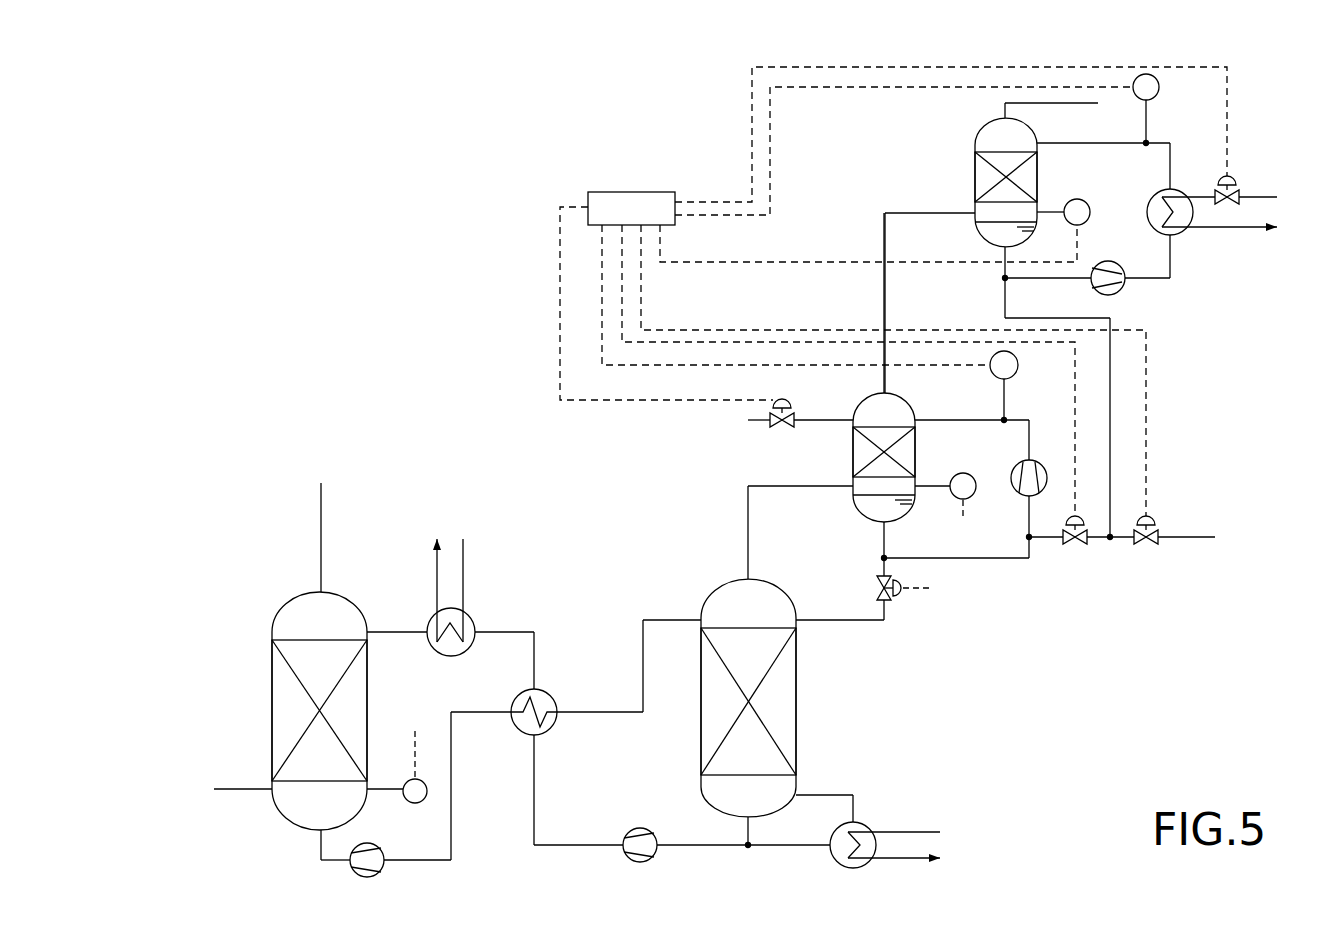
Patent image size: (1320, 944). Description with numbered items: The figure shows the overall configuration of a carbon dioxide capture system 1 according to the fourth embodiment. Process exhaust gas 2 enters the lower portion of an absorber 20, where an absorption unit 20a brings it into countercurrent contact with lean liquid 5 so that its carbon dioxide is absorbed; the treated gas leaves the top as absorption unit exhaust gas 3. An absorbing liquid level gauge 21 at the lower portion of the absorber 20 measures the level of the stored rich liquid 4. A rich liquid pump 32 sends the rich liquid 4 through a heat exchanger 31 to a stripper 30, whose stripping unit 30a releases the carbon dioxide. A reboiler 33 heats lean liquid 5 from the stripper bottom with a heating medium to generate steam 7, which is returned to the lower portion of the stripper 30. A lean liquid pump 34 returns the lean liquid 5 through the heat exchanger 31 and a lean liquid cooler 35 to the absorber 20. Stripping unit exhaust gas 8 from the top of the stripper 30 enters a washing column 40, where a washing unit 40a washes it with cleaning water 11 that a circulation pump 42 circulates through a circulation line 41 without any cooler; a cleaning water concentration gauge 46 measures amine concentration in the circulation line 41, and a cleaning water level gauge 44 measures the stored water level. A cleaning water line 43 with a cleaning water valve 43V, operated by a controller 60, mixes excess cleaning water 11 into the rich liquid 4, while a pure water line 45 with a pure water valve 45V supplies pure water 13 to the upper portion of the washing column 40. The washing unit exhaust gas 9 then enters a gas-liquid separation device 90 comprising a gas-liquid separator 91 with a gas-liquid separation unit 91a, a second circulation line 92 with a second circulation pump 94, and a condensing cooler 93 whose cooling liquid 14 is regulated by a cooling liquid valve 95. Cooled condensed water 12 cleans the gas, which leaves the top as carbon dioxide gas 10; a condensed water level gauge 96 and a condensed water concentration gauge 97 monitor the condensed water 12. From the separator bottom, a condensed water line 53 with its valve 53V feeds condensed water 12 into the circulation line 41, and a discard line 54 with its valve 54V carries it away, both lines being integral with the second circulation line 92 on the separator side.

The carbon dioxide capture system 1 is at (405, 192).
The process exhaust gas 2 is at (249, 805).
The absorption unit exhaust gas 3 is at (335, 539).
The rich liquid 4 is at (465, 727).
The lean liquid 5 is at (491, 617).
The steam 7 is at (810, 780).
The stripping unit exhaust gas 8 is at (733, 522).
The washing unit exhaust gas 9 is at (870, 280).
The carbon dioxide gas 10 is at (1047, 113).
The cleaning water 11 is at (837, 637).
The condensed water 12 is at (1052, 558).
The pure water 13 is at (742, 435).
The cooling liquid 14 is at (1245, 183).
The absorber 20 is at (264, 686).
The absorption unit 20a is at (283, 733).
The absorbing liquid level gauge 21 is at (427, 793).
The stripper 30 is at (810, 712).
The stripping unit 30a is at (712, 703).
The heat exchanger 31 is at (548, 695).
The rich liquid pump 32 is at (380, 849).
The reboiler 33 is at (868, 828).
The lean liquid pump 34 is at (645, 827).
The lean liquid cooler 35 is at (468, 650).
The washing column 40 is at (842, 497).
The washing unit 40a is at (913, 438).
The circulation line 41 is at (1031, 447).
The circulation pump 42 is at (1015, 481).
The cleaning water line 43 is at (834, 618).
The cleaning water valve 43V is at (903, 603).
The cleaning water level gauge 44 is at (973, 477).
The pure water line 45 is at (826, 423).
The pure water valve 45V is at (781, 428).
The cleaning water concentration gauge 46 is at (1019, 366).
The condensed water line 53 is at (1040, 540).
The valve 53V is at (1078, 546).
The discard line 54 is at (1198, 540).
The valve 54V is at (1152, 518).
The controller 60 is at (631, 192).
The gas-liquid separation device 90 is at (947, 130).
The gas-liquid separator 91 is at (967, 157).
The gas-liquid separation unit 91a is at (983, 175).
The second circulation line 92 is at (1170, 265).
The condensing cooler 93 is at (1150, 231).
The second circulation pump 94 is at (1105, 260).
The cooling liquid valve 95 is at (1222, 178).
The condensed water level gauge 96 is at (1068, 199).
The condensed water concentration gauge 97 is at (1160, 88).